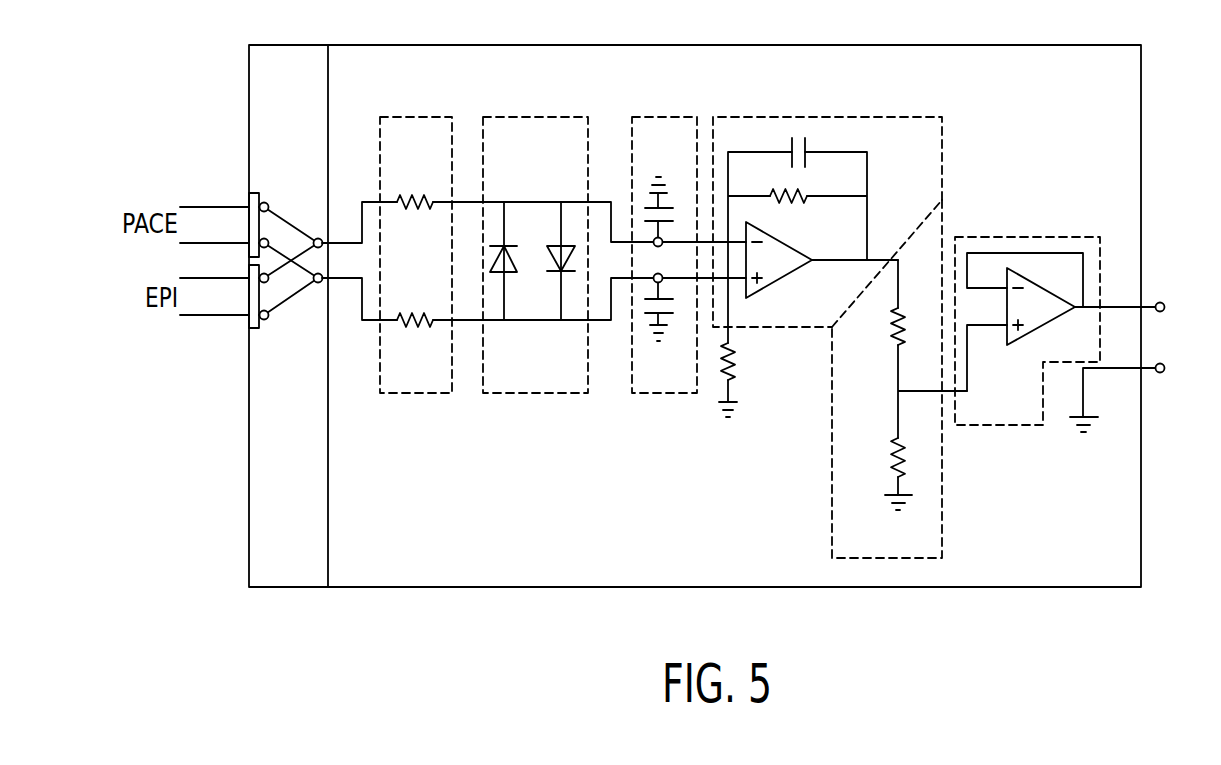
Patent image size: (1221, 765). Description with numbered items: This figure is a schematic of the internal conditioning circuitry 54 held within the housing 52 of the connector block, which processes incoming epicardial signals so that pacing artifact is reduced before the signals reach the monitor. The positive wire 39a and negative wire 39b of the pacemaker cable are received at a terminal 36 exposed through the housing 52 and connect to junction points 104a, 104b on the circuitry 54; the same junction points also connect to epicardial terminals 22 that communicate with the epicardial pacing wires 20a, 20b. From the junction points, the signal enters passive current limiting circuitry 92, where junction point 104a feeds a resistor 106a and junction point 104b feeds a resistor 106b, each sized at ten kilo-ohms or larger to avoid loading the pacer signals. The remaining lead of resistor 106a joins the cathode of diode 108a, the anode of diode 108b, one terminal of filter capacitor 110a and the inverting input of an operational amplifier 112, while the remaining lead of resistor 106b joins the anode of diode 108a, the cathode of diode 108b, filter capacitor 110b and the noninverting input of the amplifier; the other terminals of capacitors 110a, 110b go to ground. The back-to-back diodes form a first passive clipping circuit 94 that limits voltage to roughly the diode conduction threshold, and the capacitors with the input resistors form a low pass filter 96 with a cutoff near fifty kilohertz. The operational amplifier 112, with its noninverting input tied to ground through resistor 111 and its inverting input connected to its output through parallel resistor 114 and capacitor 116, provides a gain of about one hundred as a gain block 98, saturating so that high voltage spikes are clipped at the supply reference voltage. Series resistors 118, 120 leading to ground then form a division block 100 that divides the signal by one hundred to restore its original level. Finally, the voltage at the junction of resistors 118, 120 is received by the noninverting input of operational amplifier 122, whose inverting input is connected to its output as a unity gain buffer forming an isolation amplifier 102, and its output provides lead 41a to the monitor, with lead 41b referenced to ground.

The epicardial pacing wire 20a is at (215, 278).
The epicardial pacing wire 20b is at (215, 315).
The epicardial terminals 22 is at (264, 322).
The terminal 36 is at (263, 193).
The positive wire 39a is at (215, 206).
The negative wire 39b is at (215, 243).
The lead 41a is at (1115, 305).
The lead 41b is at (1120, 367).
The housing 52 is at (249, 548).
The internal conditioning circuitry 54 is at (328, 502).
The passive current limiting circuitry 92 is at (418, 116).
The first passive clipping circuit 94 is at (537, 116).
The low pass filter 96 is at (667, 116).
The gain block 98 is at (828, 116).
The division block 100 is at (832, 438).
The isolation amplifier 102 is at (1028, 236).
The junction point 104a is at (317, 238).
The junction point 104b is at (318, 283).
The resistor 106a is at (400, 188).
The resistor 106b is at (400, 328).
The diode 108a is at (518, 240).
The diode 108b is at (557, 271).
The filter capacitor 110a is at (648, 217).
The filter capacitor 110b is at (652, 305).
The resistor 111 is at (737, 367).
The operational amplifier 112 is at (780, 240).
The resistor 114 is at (790, 187).
The capacitor 116 is at (807, 143).
The resistor 118 is at (887, 320).
The resistor 120 is at (895, 440).
The operational amplifier 122 is at (1042, 328).